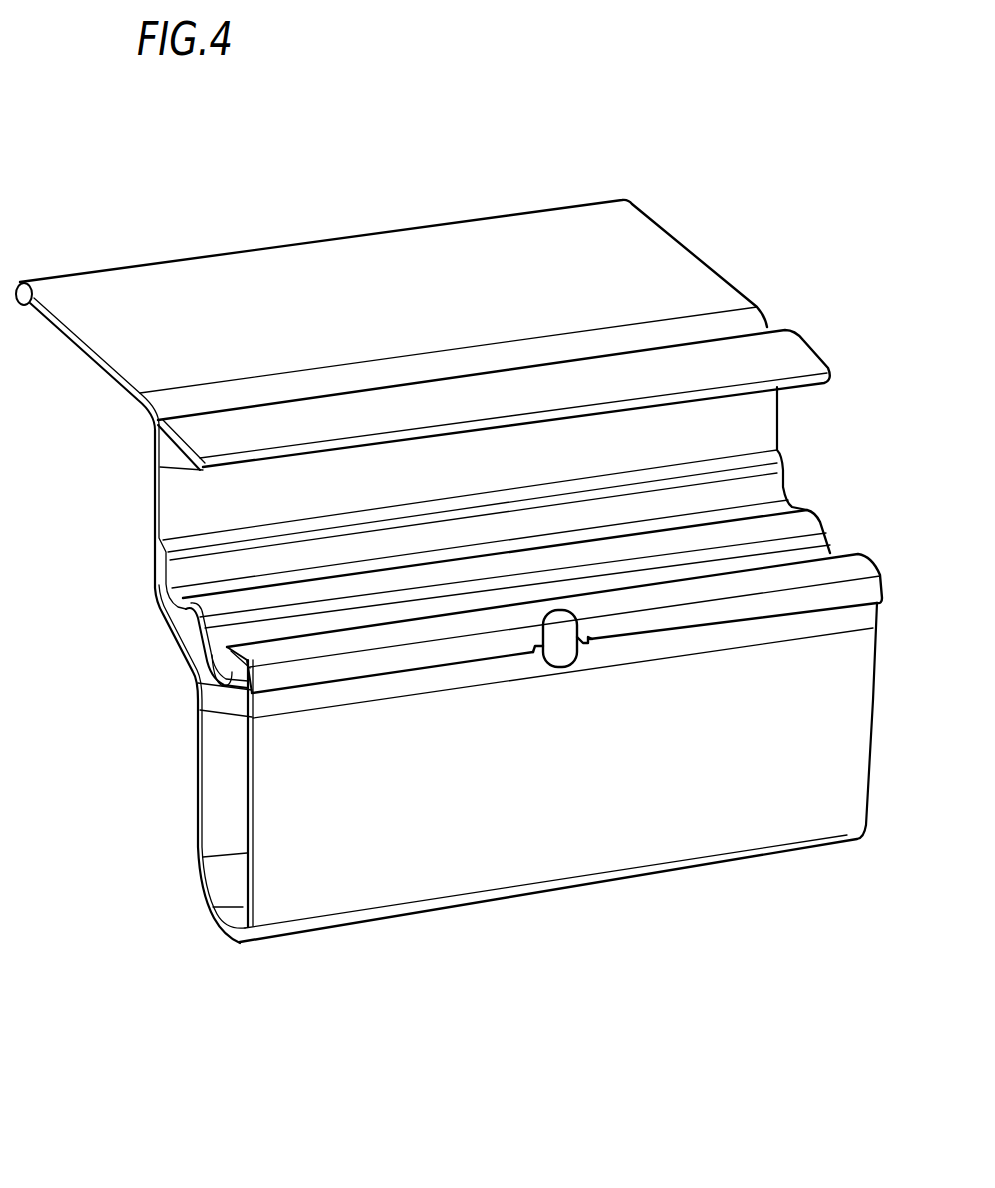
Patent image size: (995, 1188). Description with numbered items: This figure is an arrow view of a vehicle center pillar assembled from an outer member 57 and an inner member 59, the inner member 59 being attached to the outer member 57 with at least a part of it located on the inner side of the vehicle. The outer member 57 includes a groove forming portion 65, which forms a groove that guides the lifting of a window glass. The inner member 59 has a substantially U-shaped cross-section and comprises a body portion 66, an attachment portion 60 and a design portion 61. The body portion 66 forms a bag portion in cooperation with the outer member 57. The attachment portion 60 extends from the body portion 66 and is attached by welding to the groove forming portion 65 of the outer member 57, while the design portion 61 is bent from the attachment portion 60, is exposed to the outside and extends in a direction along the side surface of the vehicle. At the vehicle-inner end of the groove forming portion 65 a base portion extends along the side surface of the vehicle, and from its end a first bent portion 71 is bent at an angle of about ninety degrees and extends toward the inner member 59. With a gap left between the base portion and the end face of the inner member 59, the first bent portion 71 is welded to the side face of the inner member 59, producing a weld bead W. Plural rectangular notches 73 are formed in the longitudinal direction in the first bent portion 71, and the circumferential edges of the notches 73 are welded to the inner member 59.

The outer member 57 is at (561, 190).
The design portion 61 is at (120, 290).
The attachment portion 60 is at (150, 500).
The groove forming portion 65 is at (743, 440).
The weld bead W is at (565, 623).
The notches 73 is at (587, 637).
The first bent portion 71 is at (842, 600).
The body portion 66 is at (358, 883).
The inner member 59 is at (535, 912).